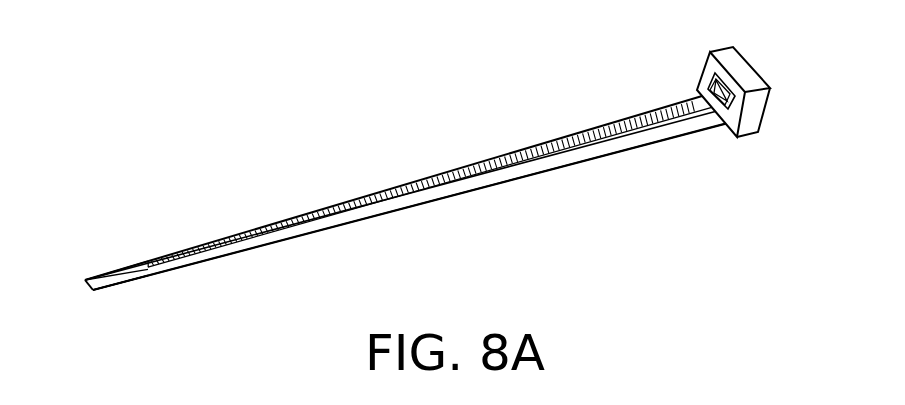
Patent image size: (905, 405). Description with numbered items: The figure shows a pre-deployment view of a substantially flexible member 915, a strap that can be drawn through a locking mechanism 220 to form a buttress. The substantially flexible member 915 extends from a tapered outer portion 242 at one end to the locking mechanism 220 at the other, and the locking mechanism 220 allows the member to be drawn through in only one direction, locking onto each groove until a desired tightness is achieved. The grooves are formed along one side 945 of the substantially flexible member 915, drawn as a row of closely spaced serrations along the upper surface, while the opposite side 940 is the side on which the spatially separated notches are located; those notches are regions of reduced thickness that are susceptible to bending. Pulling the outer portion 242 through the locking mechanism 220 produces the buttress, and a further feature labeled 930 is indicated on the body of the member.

The locking mechanism 220 is at (739, 70).
The outer portion 242 is at (118, 268).
The substantially flexible member 915 is at (643, 148).
The strap 930 is at (565, 170).
The side 940 is at (207, 261).
The side 945 is at (268, 228).